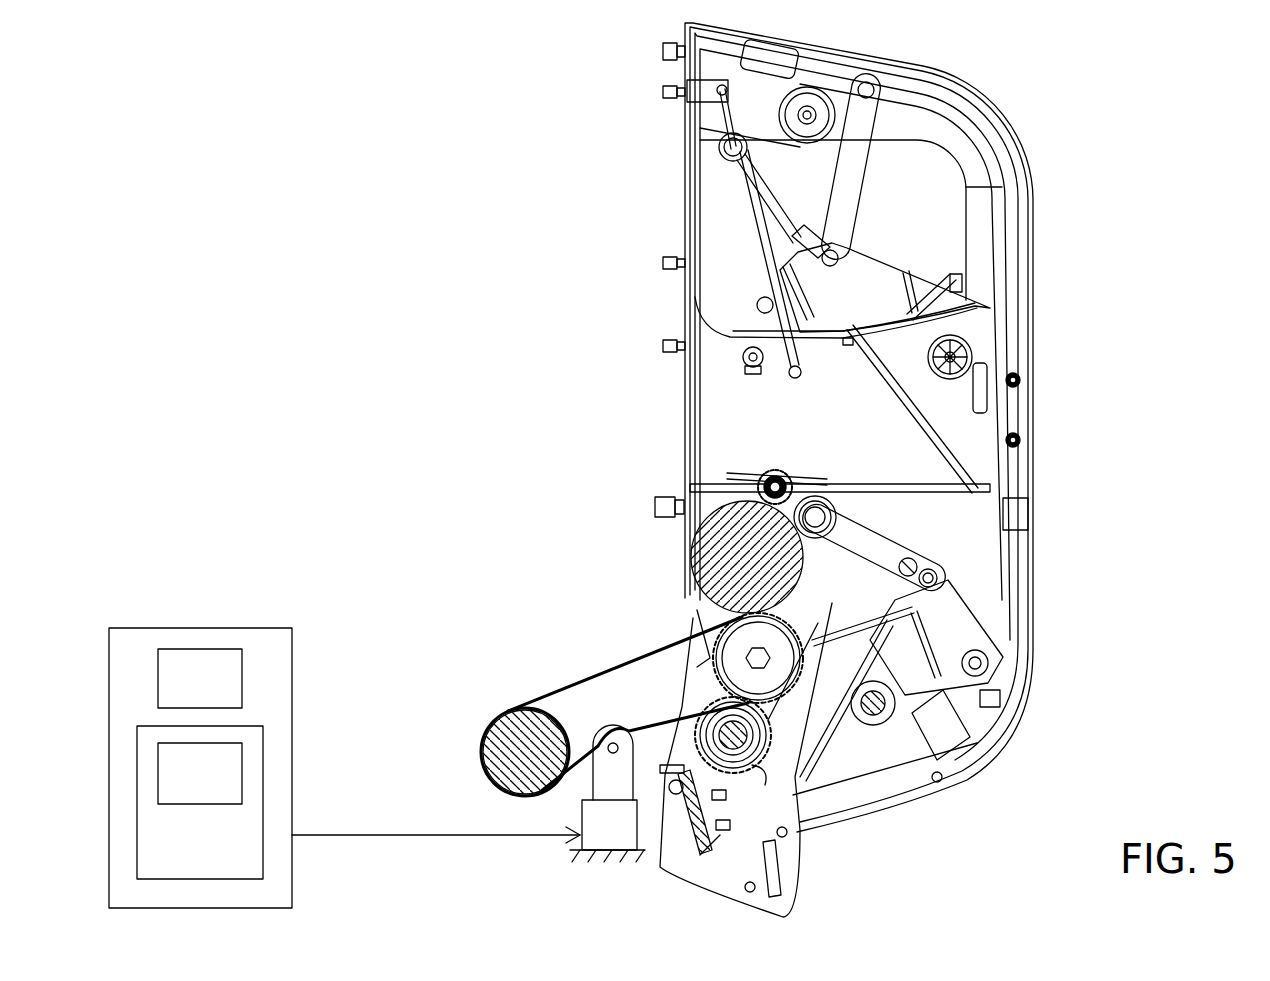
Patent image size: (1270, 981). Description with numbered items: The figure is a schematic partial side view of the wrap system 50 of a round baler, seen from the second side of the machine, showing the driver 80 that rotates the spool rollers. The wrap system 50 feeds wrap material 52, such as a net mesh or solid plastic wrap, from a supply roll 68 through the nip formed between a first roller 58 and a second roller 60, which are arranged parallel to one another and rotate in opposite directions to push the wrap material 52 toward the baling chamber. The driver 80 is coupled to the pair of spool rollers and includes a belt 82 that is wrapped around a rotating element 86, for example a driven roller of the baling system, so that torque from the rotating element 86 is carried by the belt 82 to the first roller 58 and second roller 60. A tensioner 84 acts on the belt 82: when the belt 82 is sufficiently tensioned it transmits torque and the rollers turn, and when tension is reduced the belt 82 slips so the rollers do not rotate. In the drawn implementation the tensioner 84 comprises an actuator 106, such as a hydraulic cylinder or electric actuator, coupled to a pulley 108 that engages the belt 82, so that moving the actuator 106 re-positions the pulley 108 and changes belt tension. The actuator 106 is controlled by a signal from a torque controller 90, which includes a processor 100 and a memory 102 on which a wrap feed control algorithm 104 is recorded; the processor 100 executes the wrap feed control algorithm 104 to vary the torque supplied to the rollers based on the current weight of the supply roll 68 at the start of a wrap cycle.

The wrap system 50 is at (536, 433).
The wrap material 52 is at (716, 497).
The first roller 58 is at (788, 618).
The second roller 60 is at (746, 760).
The supply roll 68 is at (710, 508).
The driver 80 is at (578, 757).
The belt 82 is at (557, 688).
The tensioner 84 is at (580, 818).
The rotating element 86 is at (505, 745).
The torque controller 90 is at (200, 725).
The processor 100 is at (176, 693).
The memory 102 is at (200, 802).
The wrap feed control algorithm 104 is at (176, 789).
The actuator 106 is at (602, 820).
The pulley 108 is at (617, 727).